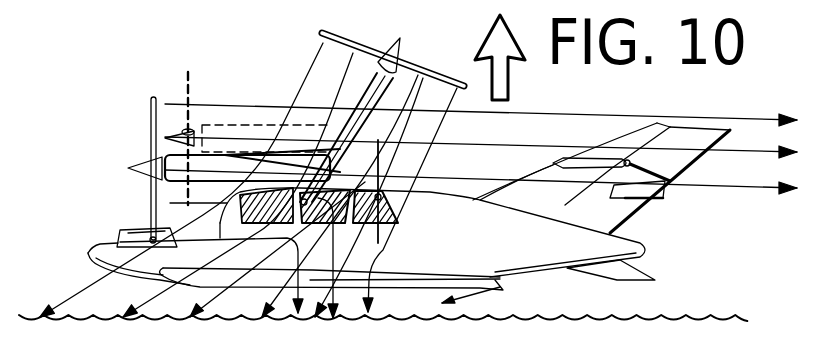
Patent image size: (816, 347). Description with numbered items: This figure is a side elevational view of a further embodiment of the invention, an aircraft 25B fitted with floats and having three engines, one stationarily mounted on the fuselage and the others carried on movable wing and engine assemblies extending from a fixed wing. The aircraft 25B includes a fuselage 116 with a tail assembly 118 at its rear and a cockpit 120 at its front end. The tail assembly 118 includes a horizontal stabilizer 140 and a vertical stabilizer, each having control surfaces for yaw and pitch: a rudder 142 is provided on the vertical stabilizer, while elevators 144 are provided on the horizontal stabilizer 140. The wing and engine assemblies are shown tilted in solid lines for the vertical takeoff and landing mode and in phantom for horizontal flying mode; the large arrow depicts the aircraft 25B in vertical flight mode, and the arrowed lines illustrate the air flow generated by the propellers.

The aircraft 25B is at (534, 133).
The fuselage 116 is at (443, 203).
The tail assembly 118 is at (667, 128).
The cockpit 120 is at (150, 213).
The horizontal stabilizer 140 is at (585, 162).
The rudder 142 is at (737, 126).
The elevators 144 is at (667, 182).